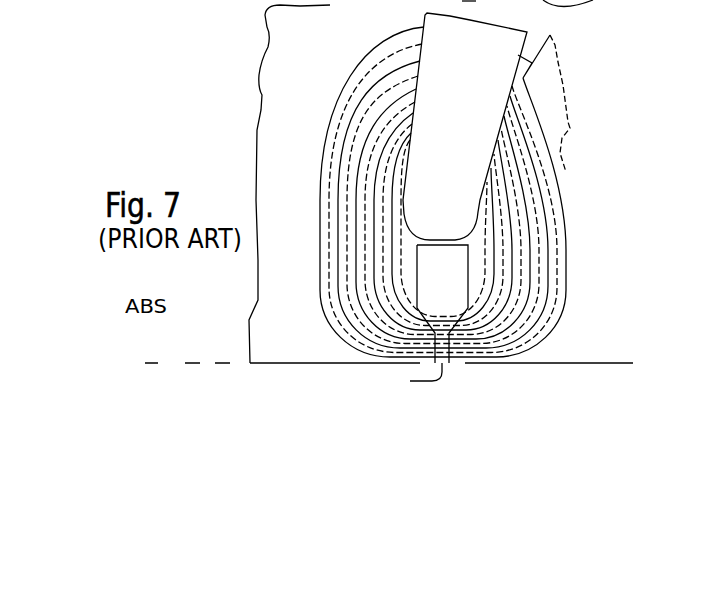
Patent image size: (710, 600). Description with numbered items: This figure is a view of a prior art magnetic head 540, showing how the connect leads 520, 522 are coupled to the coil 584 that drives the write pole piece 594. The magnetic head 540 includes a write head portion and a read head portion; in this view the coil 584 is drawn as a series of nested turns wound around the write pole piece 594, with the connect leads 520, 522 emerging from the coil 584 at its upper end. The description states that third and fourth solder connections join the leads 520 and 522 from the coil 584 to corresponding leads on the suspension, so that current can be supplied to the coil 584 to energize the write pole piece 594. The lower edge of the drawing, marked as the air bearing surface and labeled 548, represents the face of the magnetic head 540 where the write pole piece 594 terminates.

The connect lead 520 is at (466, 125).
The connect lead 522 is at (560, 74).
The magnetic head 540 is at (486, 192).
The air bearing surface 548 is at (195, 362).
The coil 584 is at (550, 247).
The write pole piece 594 is at (458, 295).